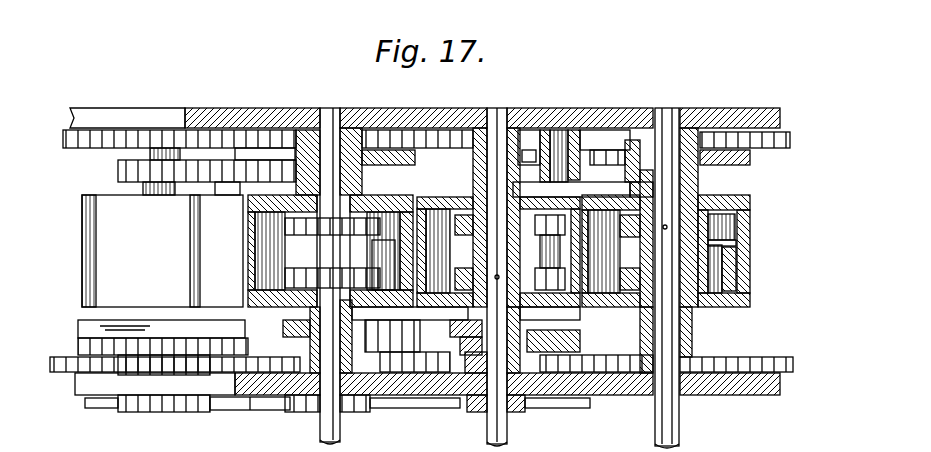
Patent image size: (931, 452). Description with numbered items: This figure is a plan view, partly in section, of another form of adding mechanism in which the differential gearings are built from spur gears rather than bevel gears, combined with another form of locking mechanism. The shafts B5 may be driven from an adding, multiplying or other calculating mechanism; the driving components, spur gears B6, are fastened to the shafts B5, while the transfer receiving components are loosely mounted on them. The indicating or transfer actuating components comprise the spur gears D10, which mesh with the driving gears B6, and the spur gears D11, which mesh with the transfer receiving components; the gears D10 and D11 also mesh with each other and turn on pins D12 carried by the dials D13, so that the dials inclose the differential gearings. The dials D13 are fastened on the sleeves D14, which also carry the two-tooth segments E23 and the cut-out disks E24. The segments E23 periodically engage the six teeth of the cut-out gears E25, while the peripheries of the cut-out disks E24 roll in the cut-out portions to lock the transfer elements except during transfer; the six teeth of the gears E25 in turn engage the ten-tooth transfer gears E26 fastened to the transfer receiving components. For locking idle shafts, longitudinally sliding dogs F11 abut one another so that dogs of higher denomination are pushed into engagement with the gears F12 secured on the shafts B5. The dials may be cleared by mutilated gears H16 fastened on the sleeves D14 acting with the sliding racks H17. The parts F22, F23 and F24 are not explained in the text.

The shaft B5 is at (340, 437).
The sliding rack H17 is at (68, 135).
The mutilated gear H16 is at (290, 128).
The cut-out gear E25 is at (215, 170).
The two-tooth segment E23 is at (270, 170).
The transfer gear E26 is at (118, 170).
The cut-out disk E24 is at (750, 155).
The dial D13 is at (82, 252).
The pinion F22 is at (620, 276).
The spur gear B6 is at (290, 236).
The sleeve D14 is at (347, 130).
The spur gear D10 is at (735, 223).
The spur gear D11 is at (736, 272).
The pin D12 is at (722, 205).
The gear F23 is at (433, 330).
The gear F24 is at (516, 268).
The gear F12 is at (128, 408).
The sliding dog F11 is at (236, 405).